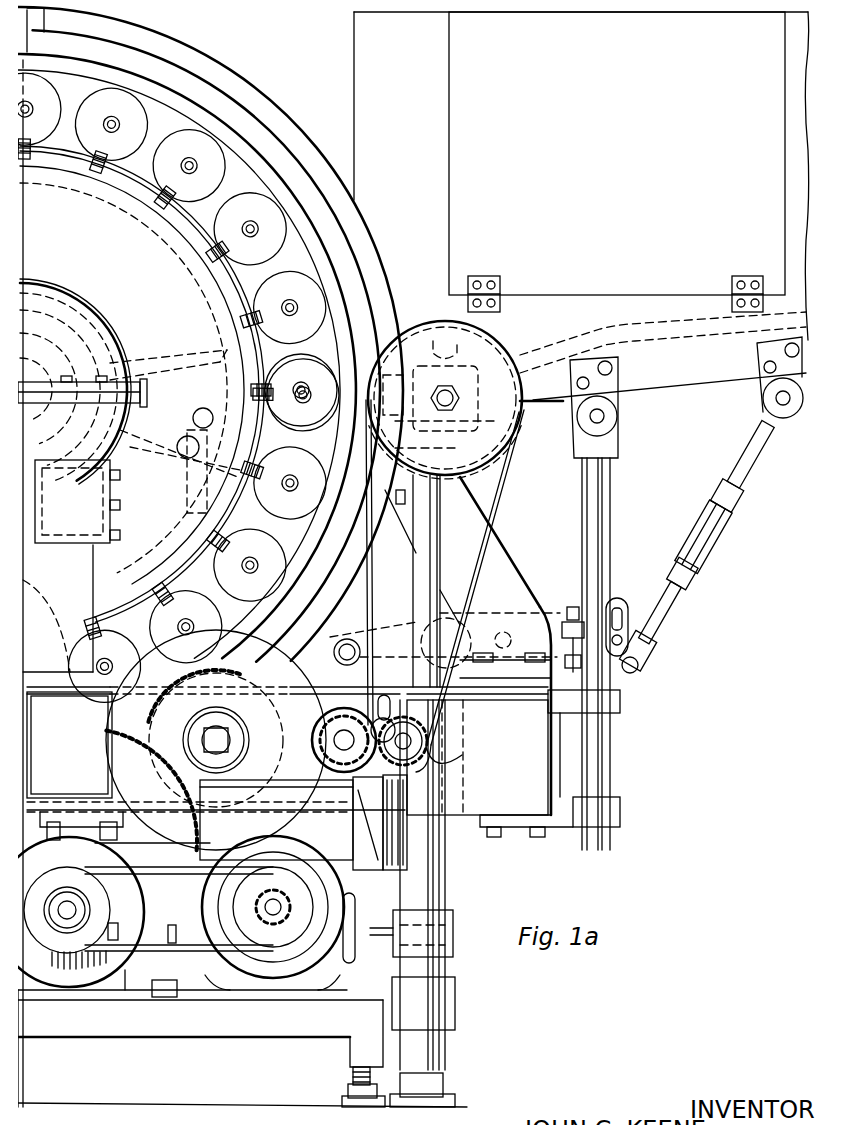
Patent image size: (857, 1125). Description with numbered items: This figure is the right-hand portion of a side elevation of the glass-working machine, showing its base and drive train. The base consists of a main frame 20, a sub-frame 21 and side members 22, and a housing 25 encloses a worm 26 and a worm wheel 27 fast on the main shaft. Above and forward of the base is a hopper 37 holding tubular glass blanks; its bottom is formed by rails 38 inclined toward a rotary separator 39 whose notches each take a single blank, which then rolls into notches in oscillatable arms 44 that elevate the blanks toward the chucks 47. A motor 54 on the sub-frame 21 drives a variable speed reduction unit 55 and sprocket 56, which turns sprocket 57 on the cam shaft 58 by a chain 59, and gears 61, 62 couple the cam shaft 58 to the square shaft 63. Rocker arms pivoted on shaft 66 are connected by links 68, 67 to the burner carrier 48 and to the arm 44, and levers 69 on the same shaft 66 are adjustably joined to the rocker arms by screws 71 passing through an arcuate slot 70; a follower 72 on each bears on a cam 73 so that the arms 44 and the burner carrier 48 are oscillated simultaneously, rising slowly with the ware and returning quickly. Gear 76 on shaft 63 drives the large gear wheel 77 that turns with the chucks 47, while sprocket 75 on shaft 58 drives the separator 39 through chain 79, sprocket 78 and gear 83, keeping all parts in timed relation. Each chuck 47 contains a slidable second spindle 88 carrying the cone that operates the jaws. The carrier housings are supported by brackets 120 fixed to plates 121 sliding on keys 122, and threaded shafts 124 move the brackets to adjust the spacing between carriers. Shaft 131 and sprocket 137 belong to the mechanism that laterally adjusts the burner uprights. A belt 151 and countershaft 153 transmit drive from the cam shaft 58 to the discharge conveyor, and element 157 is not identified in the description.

The main frame 20 is at (447, 1047).
The sub-frame 21 is at (350, 1055).
The side members 22 is at (476, 828).
The housing 25 is at (116, 342).
The worm 26 is at (77, 501).
The worm wheel 27 is at (98, 318).
The hopper 37 is at (354, 45).
The rails 38 is at (650, 322).
The rotary separator 39 is at (508, 428).
The oscillatable arms 44 is at (160, 458).
The chucks 47 is at (140, 100).
The burner carrier 48 is at (99, 391).
The motor 54 is at (66, 982).
The variable speed reduction unit 55 is at (268, 992).
The sprocket 56 is at (260, 906).
The sprocket 57 is at (477, 757).
The cam shaft 58 is at (335, 722).
The chain 59 is at (318, 868).
The gear 61 is at (217, 740).
The gear 62 is at (170, 870).
The shaft 63 is at (216, 740).
The shaft 66 is at (448, 632).
The link 67 is at (209, 456).
The link 68 is at (244, 560).
The levers 69 is at (385, 640).
The arcuate slot 70 is at (622, 610).
The screws 71 is at (568, 656).
The follower 72 is at (347, 639).
The cams 73 is at (300, 660).
The sprocket 75 is at (432, 752).
The gear 76 is at (110, 760).
The large gear wheels 77 is at (95, 735).
The sprocket 78 is at (495, 464).
The chain 79 is at (505, 507).
The gear 83 is at (388, 691).
The second spindle 88 is at (448, 766).
The brackets 120 is at (500, 563).
The plates 121 is at (492, 757).
The keys 122 is at (528, 690).
The threaded shafts 124 is at (530, 602).
The shaft 131 is at (172, 880).
The sprocket 137 is at (58, 608).
The belt 151 is at (378, 880).
The countershaft 153 is at (172, 943).
The housing 157 is at (413, 795).